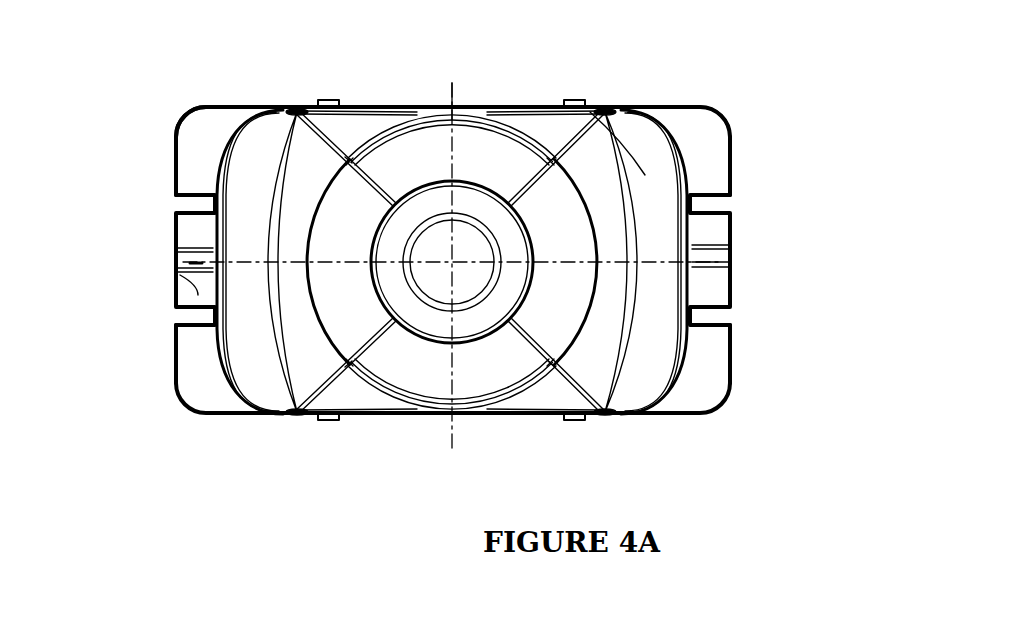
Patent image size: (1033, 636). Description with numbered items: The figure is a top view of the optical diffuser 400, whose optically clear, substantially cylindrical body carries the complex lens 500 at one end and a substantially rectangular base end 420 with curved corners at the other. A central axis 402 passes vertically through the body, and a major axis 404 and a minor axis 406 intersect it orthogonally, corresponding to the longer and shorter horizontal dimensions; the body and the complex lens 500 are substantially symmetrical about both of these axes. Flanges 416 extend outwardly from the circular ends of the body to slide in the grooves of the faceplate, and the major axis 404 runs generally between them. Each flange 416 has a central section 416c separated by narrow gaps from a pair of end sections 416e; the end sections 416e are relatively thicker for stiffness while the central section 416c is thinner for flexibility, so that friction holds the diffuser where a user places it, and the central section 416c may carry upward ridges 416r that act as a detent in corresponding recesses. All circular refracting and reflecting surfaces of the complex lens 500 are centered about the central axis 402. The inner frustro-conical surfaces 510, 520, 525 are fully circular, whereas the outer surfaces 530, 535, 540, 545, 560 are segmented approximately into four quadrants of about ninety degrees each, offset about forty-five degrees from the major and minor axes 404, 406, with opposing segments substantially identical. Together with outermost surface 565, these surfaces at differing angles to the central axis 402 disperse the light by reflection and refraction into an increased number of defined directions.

The optical diffuser 400 is at (237, 475).
The central axis 402 is at (450, 263).
The major axis 404 is at (743, 262).
The minor axis 406 is at (460, 426).
The flanges 416 is at (710, 102).
The central section 416c is at (160, 262).
The end sections 416e is at (730, 149).
The upward projections or ridges 416r is at (200, 280).
The base end 420 is at (677, 153).
The complex lens 500 is at (357, 103).
The inner frustro-conical section and surface 510 is at (466, 250).
The inner frustro-conical section and surface 520 is at (498, 292).
The inner frustro-conical section and surface 525 is at (453, 340).
The outer segmented frustro-conical surface 530 is at (547, 212).
The outer segmented frustro-conical surface 535 is at (328, 350).
The outer segmented frustro-conical surface 540 is at (277, 153).
The outer segmented frustro-conical surface 545 is at (641, 122).
The outer segmented frustro-conical surface 560 is at (487, 165).
The frustro-conical surface 565 is at (398, 128).